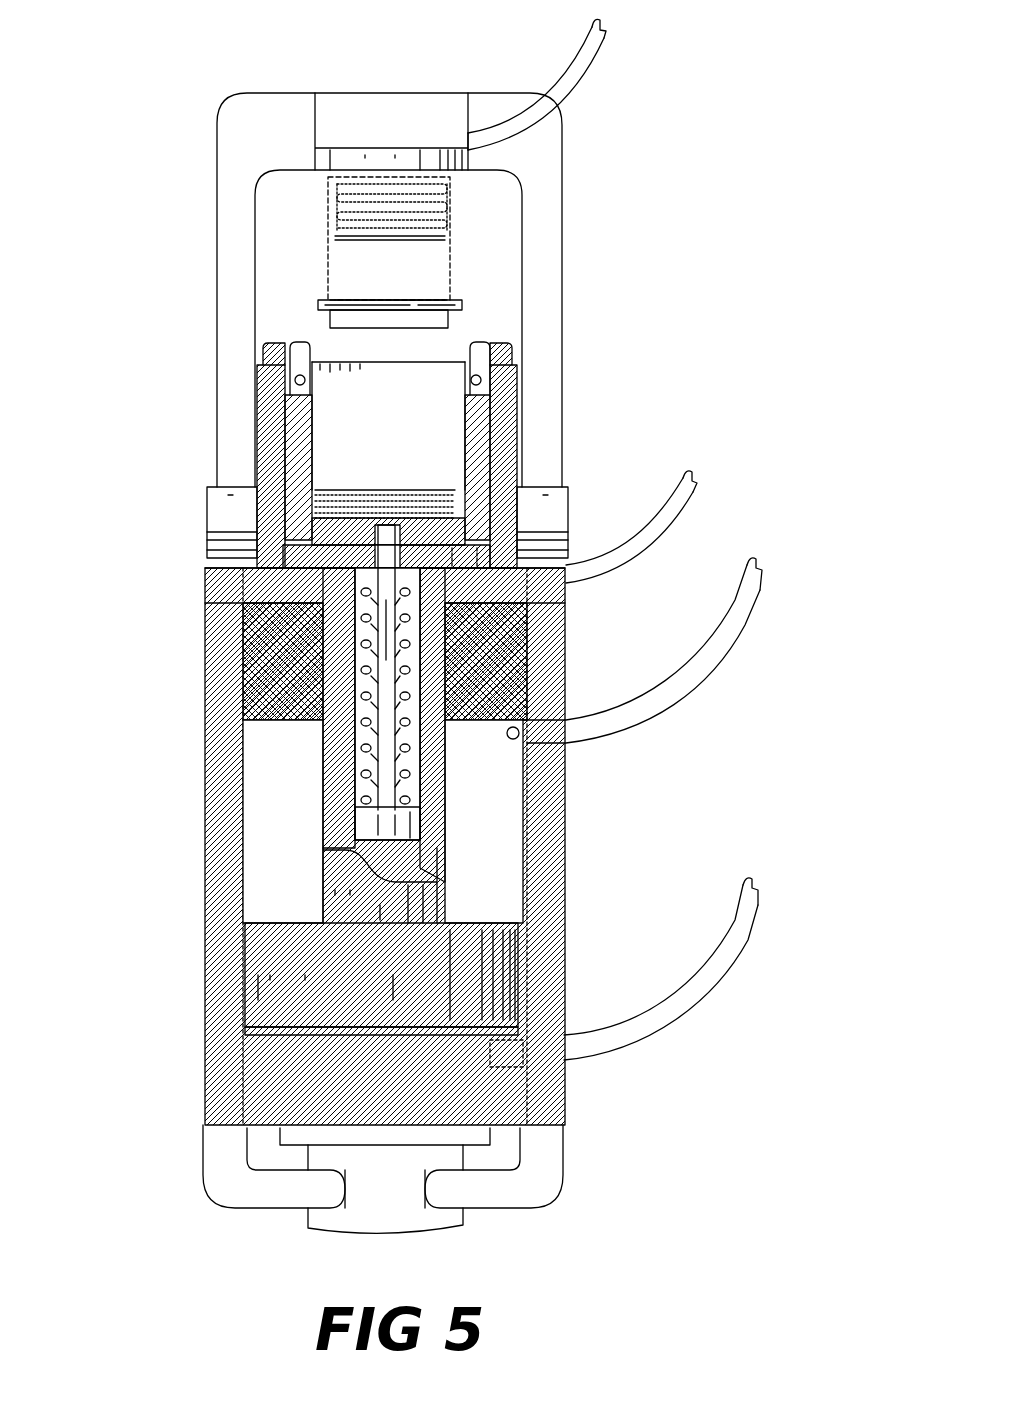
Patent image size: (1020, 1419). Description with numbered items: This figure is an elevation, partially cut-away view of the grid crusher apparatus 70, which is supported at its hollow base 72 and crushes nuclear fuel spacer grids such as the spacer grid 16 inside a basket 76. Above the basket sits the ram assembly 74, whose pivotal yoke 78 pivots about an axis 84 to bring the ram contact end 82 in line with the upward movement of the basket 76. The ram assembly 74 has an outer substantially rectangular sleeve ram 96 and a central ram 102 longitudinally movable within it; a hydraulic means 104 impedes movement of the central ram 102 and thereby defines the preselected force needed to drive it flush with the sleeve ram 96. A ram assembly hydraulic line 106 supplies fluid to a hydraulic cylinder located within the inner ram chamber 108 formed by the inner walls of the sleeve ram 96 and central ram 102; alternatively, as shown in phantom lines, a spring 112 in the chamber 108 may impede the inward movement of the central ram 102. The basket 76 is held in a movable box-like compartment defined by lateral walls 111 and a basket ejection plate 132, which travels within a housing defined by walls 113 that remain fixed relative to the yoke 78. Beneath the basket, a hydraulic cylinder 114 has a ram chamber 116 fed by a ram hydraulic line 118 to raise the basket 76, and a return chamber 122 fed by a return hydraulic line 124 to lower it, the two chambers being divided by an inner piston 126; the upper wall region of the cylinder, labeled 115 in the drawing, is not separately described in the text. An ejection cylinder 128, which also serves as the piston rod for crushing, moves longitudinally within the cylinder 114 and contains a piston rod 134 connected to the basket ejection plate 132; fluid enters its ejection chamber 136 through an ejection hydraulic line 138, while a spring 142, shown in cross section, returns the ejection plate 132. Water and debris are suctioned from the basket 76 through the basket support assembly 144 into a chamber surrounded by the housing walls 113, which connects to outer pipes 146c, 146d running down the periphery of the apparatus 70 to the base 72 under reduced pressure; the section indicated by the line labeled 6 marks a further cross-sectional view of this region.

The grid crusher apparatus 70 is at (722, 137).
The base 72 is at (340, 1233).
The ram assembly 74 is at (198, 334).
The basket 76 is at (352, 387).
The pivotal yoke 78 is at (555, 240).
The ram contact end 82 is at (412, 333).
The axis 84 is at (218, 510).
The sleeve ram 96 is at (322, 250).
The central ram 102 is at (442, 262).
The hydraulic means 104 is at (484, 160).
The ram assembly hydraulic line 106 is at (584, 82).
The inner ram chamber 108 is at (330, 208).
The lateral walls 111 is at (280, 453).
The spring 112 is at (452, 206).
The housing walls 113 is at (262, 406).
The hydraulic cylinder 114 is at (198, 948).
The body top wall 115 is at (206, 586).
The ram chamber 116 is at (315, 1028).
The ram hydraulic line 118 is at (648, 1030).
The return chamber 122 is at (258, 775).
The return hydraulic line 124 is at (675, 697).
The inner piston 126 is at (467, 923).
The ejection cylinder 128 is at (338, 875).
The basket ejection plate 132 is at (410, 520).
The piston rod 134 is at (452, 640).
The ejection chamber 136 is at (447, 688).
The ejection hydraulic line 138 is at (690, 502).
The spring 142 is at (567, 600).
The basket support assembly 144 is at (480, 455).
The outer pipe 146c is at (550, 1155).
The outer pipe 146d is at (218, 1182).
The spacer grid 16 is at (390, 500).
The section line 6- 6 is at (228, 478).